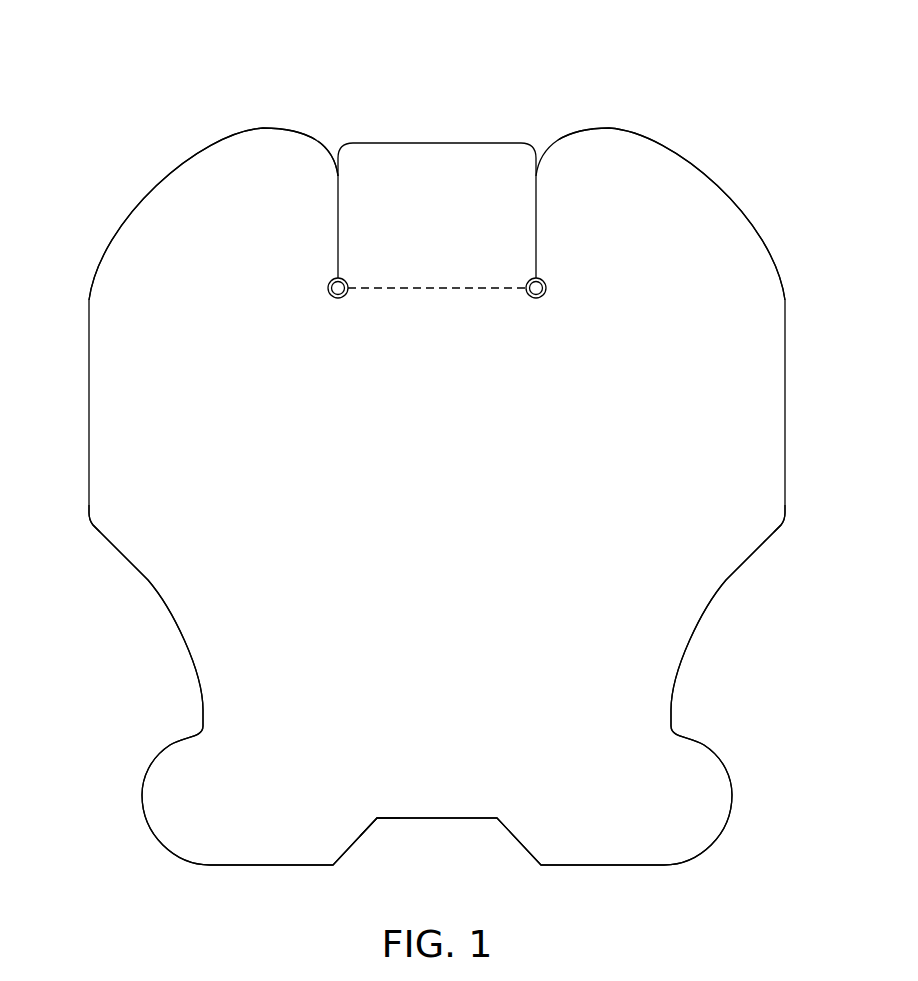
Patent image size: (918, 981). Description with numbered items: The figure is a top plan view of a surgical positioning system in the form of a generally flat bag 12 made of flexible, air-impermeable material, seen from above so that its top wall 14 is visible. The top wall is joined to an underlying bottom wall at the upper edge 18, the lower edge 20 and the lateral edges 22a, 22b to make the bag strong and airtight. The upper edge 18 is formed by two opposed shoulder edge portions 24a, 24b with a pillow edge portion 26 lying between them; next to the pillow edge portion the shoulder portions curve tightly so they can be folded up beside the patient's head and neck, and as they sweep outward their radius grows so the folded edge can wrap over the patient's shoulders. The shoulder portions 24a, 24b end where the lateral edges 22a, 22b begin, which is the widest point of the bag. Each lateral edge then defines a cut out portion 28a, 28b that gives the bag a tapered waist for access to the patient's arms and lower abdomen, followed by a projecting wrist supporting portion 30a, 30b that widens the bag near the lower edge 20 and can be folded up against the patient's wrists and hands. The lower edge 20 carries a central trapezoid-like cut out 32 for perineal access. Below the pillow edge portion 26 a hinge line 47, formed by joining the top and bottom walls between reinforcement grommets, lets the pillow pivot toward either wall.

The bag 12 is at (150, 79).
The top wall 14 is at (448, 514).
The upper edge 18 is at (350, 141).
The lower edge 20 is at (331, 868).
The lateral edge 22a is at (88, 523).
The lateral edge 22b is at (789, 519).
The shoulder edge portion 24a is at (263, 127).
The shoulder edge portion 24b is at (607, 127).
The pillow edge portion 26 is at (437, 142).
The cut out portion 28a is at (173, 624).
The cut out portion 28b is at (700, 622).
The wrist supporting portion 30a is at (142, 797).
The wrist supporting portion 30b is at (732, 795).
The trapezoid-like cut out 32 is at (373, 822).
The hinge line 47 is at (437, 291).